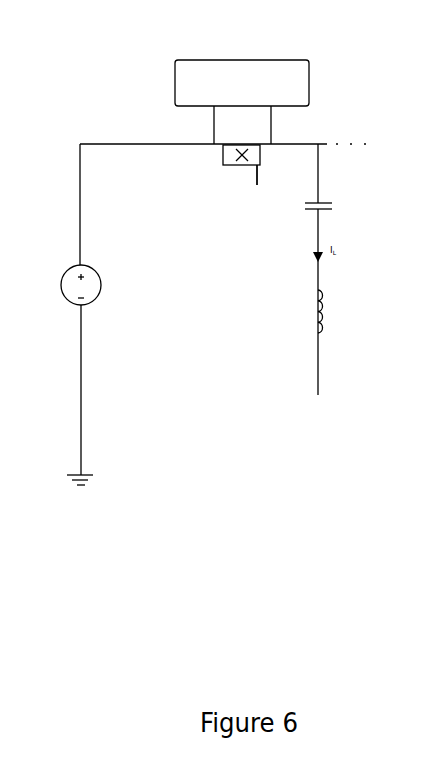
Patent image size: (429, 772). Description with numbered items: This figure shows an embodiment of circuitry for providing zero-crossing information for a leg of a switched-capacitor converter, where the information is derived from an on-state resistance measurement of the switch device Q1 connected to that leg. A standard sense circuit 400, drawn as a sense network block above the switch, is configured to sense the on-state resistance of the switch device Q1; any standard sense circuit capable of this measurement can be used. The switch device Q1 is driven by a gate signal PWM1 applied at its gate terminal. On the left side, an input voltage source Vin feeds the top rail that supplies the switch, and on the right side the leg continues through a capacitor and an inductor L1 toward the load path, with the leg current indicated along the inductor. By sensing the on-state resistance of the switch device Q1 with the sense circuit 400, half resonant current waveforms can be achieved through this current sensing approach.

The sense circuit 400 is at (211, 60).
The switch device Q1 is at (241, 150).
The PWM gate drive signal PWM1 is at (247, 194).
The input voltage source Vin is at (70, 285).
The inductor L1 is at (332, 311).